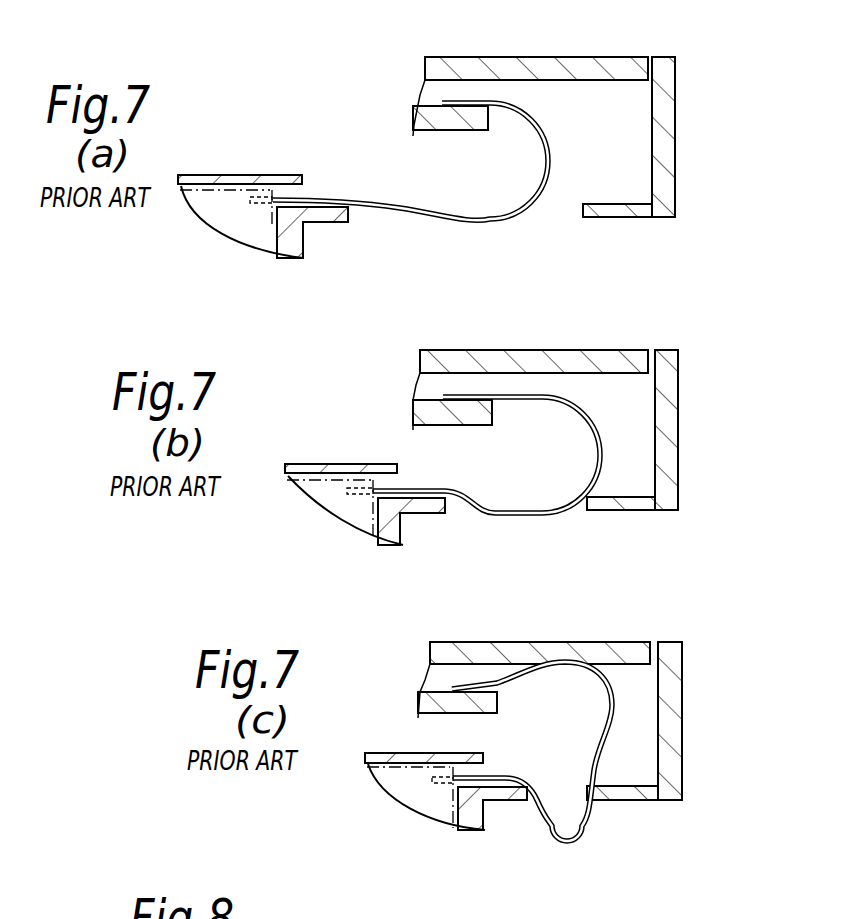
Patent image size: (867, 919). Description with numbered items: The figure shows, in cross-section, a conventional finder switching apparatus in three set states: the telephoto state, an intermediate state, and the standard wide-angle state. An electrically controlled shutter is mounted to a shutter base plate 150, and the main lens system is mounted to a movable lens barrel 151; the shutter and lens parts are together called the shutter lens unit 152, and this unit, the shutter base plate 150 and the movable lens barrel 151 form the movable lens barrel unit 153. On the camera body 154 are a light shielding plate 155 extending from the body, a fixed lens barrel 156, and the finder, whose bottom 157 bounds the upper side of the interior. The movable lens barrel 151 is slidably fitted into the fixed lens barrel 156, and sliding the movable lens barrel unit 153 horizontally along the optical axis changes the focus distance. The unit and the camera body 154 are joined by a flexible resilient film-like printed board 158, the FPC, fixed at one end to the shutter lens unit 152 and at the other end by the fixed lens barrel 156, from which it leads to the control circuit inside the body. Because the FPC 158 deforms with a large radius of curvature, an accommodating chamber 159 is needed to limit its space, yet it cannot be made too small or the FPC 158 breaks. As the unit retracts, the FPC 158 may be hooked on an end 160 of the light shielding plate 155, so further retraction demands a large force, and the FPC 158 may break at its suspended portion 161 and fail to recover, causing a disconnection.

In FIG. 7A, the shutter base plate 150 is at (303, 245).
In FIG. 7B, the shutter base plate 150 is at (402, 532).
In FIG. 7C, the shutter base plate 150 is at (485, 818).
In FIG. 7A, the movable lens barrel 151 is at (243, 175).
In FIG. 7B, the movable lens barrel 151 is at (322, 463).
In FIG. 7C, the movable lens barrel 151 is at (390, 752).
In FIG. 7A, the shutter lens unit 152 is at (243, 232).
In FIG. 7B, the shutter lens unit 152 is at (352, 518).
In FIG. 7C, the shutter lens unit 152 is at (437, 812).
In FIG. 7A, the movable lens barrel unit 153 is at (190, 220).
In FIG. 7B, the movable lens barrel unit 153 is at (284, 506).
In FIG. 7C, the movable lens barrel unit 153 is at (384, 813).
In FIG. 7A, the camera body 154 is at (676, 125).
In FIG. 7B, the camera body 154 is at (680, 436).
In FIG. 7C, the camera body 154 is at (683, 705).
In FIG. 7A, the light shielding plate 155 is at (635, 217).
In FIG. 7B, the light shielding plate 155 is at (652, 513).
In FIG. 7C, the light shielding plate 155 is at (655, 800).
In FIG. 7A, the fixed lens barrel 156 is at (441, 131).
In FIG. 7B, the fixed lens barrel 156 is at (476, 427).
In FIG. 7C, the fixed lens barrel 156 is at (490, 713).
In FIG. 7A, the bottom of the finder 157 is at (575, 57).
In FIG. 7B, the bottom of the finder 157 is at (553, 350).
In FIG. 7C, the bottom of the finder 157 is at (568, 642).
In FIG. 7A, the flexible resilient film-like printed board (FPC) 158 is at (547, 147).
In FIG. 7B, the flexible resilient film-like printed board (FPC) 158 is at (604, 440).
In FIG. 7C, the flexible resilient film-like printed board (FPC) 158 is at (625, 735).
In FIG. 7A, the accommodating chamber 159 is at (632, 100).
In FIG. 7B, the accommodating chamber 159 is at (628, 395).
In FIG. 7C, the accommodating chamber 159 is at (632, 678).
In FIG. 7A, the end of the light shielding plate 160 is at (583, 208).
In FIG. 7B, the end of the light shielding plate 160 is at (582, 513).
In FIG. 7C, the end of the light shielding plate 160 is at (596, 793).
In FIG. 7C, the suspended portion of the FPC 161 is at (565, 845).